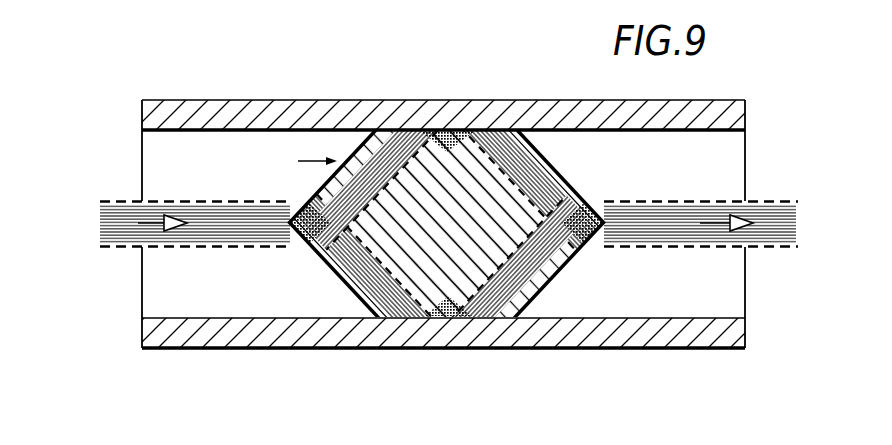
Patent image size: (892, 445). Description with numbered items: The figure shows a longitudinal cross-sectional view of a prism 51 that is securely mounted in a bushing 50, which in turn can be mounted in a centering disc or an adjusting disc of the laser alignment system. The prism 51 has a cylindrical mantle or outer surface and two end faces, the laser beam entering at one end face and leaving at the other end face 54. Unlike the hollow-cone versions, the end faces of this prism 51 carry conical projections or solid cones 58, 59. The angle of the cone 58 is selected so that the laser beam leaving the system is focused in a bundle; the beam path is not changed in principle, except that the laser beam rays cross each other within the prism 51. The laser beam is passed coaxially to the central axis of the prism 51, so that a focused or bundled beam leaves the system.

The bushing 50 is at (360, 114).
The prism 51 is at (480, 200).
The end face 54 is at (457, 226).
The solid cone 58 is at (372, 287).
The solid cone 59 is at (522, 290).